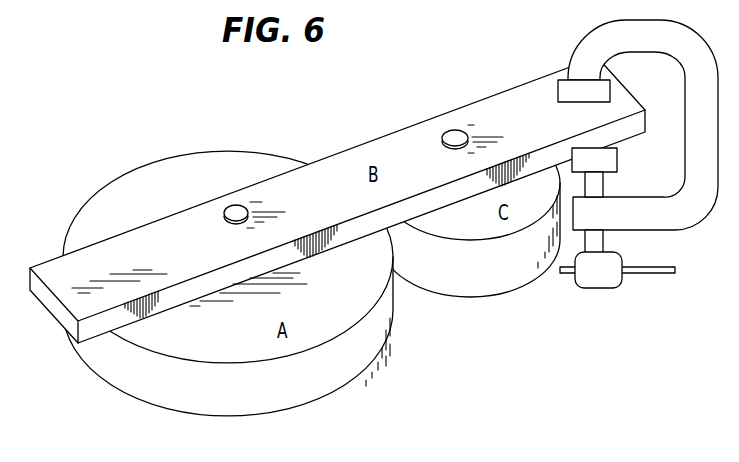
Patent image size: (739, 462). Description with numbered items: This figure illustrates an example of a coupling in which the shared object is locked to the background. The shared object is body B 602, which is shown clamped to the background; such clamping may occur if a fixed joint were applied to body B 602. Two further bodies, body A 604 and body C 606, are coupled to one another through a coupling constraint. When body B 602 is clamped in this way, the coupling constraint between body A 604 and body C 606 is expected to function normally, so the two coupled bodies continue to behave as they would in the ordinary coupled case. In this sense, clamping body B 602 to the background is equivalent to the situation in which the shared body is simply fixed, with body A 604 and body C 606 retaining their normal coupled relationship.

The body B 602 is at (401, 141).
The body A 604 is at (146, 393).
The body C 606 is at (456, 288).